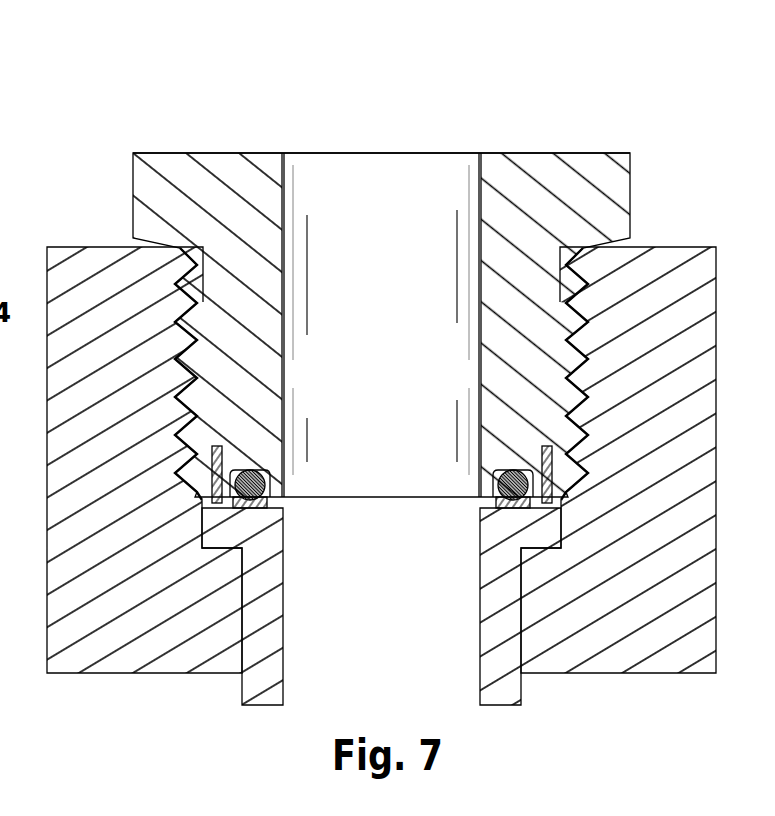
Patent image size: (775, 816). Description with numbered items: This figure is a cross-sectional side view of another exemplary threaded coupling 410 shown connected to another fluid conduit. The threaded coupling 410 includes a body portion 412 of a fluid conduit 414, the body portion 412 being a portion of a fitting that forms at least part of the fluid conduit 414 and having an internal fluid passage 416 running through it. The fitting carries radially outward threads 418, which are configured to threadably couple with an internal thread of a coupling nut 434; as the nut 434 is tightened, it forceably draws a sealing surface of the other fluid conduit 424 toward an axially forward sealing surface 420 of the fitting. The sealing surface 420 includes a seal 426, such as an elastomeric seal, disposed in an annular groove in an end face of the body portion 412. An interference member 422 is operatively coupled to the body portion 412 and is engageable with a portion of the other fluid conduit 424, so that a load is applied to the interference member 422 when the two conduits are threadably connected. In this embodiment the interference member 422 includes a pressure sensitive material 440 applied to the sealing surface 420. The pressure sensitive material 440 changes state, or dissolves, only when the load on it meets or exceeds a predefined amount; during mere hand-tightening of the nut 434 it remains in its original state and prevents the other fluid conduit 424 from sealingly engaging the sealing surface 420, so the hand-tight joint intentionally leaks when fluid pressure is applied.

The threaded coupling 410 is at (166, 130).
The body portion 412 is at (152, 192).
The fluid conduit 414 is at (591, 132).
The internal fluid passage 416 is at (402, 185).
The threads 418 is at (583, 382).
The sealing surface 420 is at (494, 510).
The interference member 422 is at (192, 503).
The other fluid conduit 424 is at (582, 700).
The seal 426 is at (268, 486).
The coupling nut 434 is at (694, 608).
The pressure sensitive material 440 is at (537, 503).